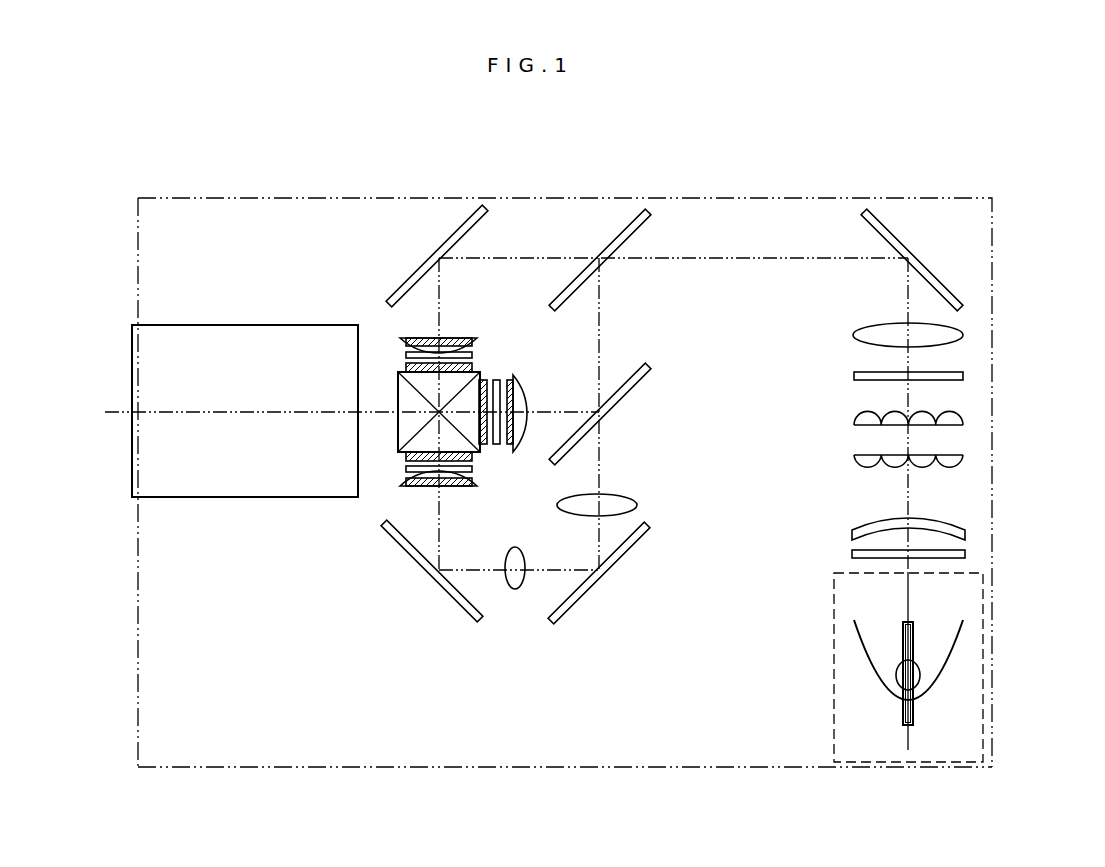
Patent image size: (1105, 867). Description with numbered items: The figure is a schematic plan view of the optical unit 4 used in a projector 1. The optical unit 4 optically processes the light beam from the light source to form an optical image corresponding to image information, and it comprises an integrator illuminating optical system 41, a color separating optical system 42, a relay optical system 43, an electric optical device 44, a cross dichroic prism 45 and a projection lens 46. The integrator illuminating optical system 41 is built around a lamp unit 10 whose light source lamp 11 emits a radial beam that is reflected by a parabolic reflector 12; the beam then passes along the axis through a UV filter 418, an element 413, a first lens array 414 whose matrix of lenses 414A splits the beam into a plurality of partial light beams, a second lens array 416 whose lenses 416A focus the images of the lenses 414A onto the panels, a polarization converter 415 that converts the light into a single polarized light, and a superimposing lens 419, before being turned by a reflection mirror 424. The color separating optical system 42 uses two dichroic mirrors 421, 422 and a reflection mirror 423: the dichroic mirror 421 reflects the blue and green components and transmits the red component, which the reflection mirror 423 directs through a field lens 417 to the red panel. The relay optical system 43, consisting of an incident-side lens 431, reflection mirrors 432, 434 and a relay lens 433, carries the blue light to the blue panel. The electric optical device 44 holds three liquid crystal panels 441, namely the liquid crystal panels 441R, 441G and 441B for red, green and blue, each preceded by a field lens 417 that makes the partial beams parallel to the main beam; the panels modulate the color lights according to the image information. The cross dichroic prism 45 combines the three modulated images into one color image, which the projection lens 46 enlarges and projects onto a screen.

The projector 1 is at (965, 198).
The optical unit 4 is at (462, 734).
The lamp unit 10 is at (990, 680).
The light source lamp 11 is at (903, 640).
The reflector 12 is at (877, 685).
The integrator illuminating optical system 41 is at (1004, 570).
The parallelizing lens 413 is at (965, 535).
The first lens array 414 is at (963, 460).
The lens 414A is at (895, 462).
The polarization converter 415 is at (963, 376).
The second lens array 416 is at (963, 423).
The lens 416A is at (892, 418).
The field lens 417 is at (407, 337).
The UV filter 418 is at (965, 554).
The superimposing lens 419 is at (963, 336).
The color separating optical system 42 is at (590, 235).
The dichroic mirror 421 is at (628, 230).
The dichroic mirror 422 is at (632, 380).
The reflection mirror 423 is at (457, 227).
The reflection mirror 424 is at (893, 230).
The relay optical system 43 is at (643, 560).
The incident-side lens 431 is at (618, 500).
The reflection mirror 432 is at (578, 599).
The relay lens 433 is at (519, 589).
The reflection mirror 434 is at (463, 608).
The electric optical device 44 is at (487, 464).
The liquid crystal panel 441 is at (380, 419).
The liquid crystal panel for red light 441R is at (406, 355).
The liquid crystal panel for green light 441G is at (496, 380).
The liquid crystal panel for blue light 441B is at (406, 470).
The cross dichroic prism 45 is at (398, 423).
The projection lens 46 is at (180, 325).